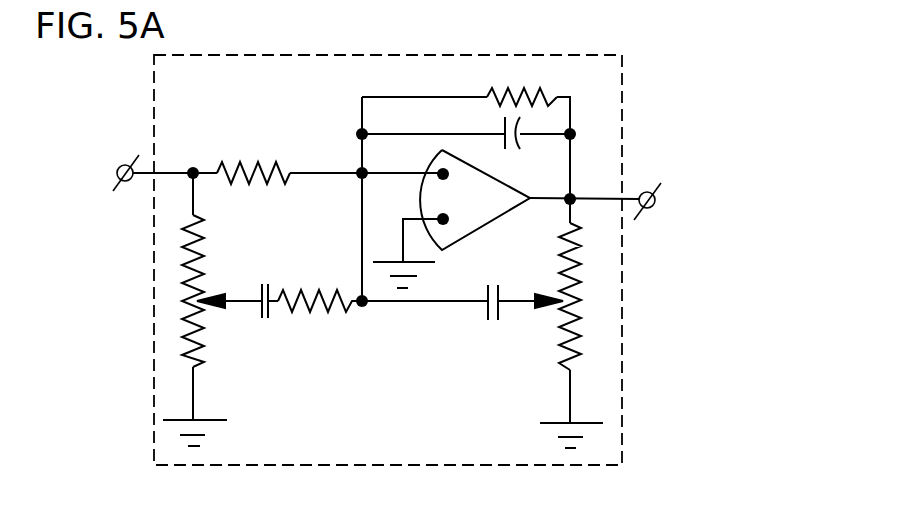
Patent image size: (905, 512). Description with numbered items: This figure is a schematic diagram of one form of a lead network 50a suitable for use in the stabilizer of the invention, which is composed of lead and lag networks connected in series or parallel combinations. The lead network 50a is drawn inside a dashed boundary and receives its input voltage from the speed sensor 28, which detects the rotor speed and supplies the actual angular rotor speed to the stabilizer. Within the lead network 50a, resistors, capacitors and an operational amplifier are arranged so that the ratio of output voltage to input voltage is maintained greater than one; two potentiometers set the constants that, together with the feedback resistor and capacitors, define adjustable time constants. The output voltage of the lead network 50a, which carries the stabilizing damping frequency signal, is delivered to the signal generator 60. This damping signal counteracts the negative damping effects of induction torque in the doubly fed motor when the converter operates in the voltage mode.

The lead network 50a is at (152, 115).
The speed sensor 28 is at (82, 237).
The signal generator 60 is at (710, 253).